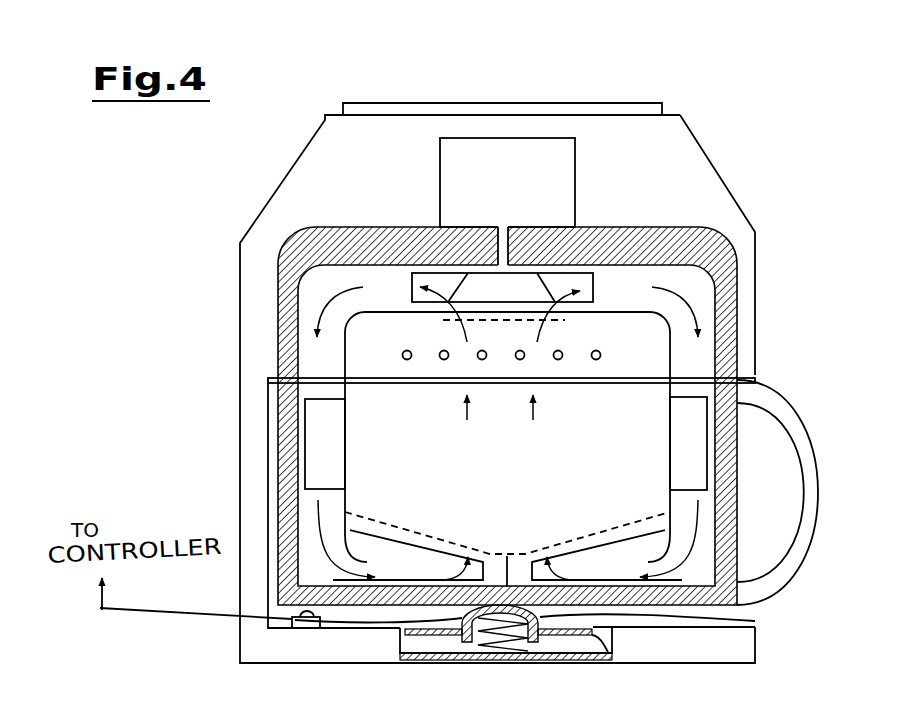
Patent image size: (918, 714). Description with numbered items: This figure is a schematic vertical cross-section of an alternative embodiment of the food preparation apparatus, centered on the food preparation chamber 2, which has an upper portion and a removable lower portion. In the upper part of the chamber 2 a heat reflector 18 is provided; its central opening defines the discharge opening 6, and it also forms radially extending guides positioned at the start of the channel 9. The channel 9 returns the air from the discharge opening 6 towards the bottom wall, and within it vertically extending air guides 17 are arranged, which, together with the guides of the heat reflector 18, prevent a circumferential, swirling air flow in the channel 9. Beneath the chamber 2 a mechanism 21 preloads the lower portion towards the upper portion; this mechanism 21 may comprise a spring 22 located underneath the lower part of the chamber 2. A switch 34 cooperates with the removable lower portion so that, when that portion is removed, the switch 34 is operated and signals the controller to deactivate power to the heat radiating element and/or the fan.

The food preparation chamber 2 is at (630, 401).
The discharge opening 6 is at (498, 310).
The channel 9 is at (317, 390).
The air guides 17 is at (317, 452).
The heat reflector 18 is at (553, 318).
The mechanism 21 is at (545, 620).
The spring 22 is at (478, 648).
The switch 34 is at (290, 620).